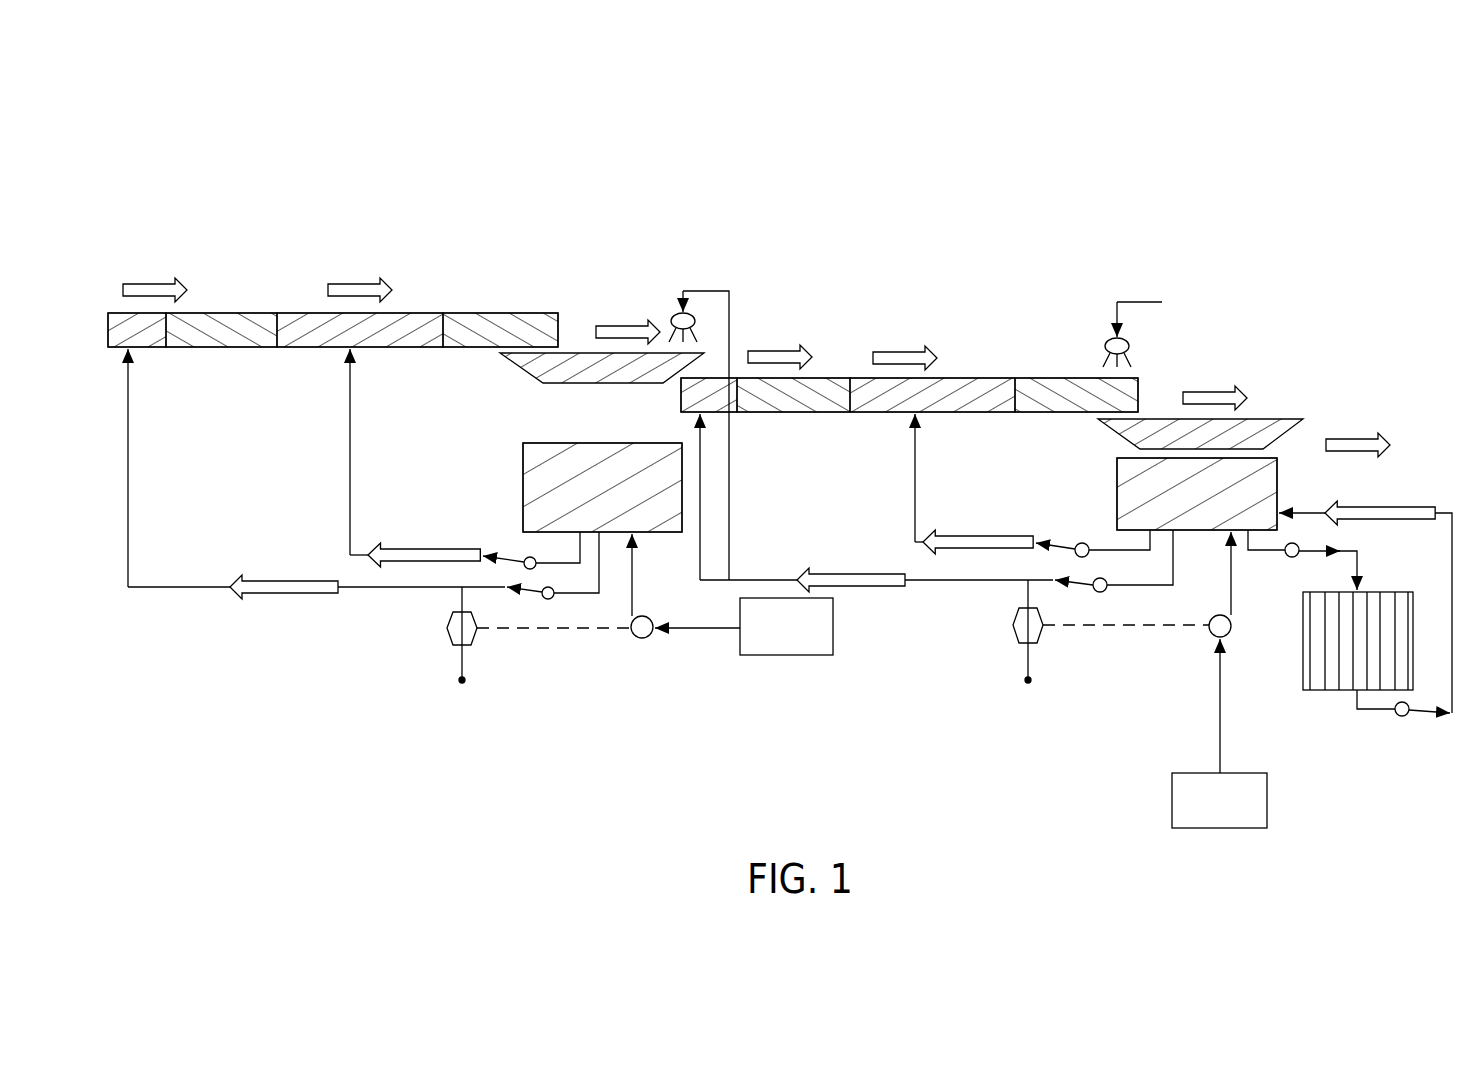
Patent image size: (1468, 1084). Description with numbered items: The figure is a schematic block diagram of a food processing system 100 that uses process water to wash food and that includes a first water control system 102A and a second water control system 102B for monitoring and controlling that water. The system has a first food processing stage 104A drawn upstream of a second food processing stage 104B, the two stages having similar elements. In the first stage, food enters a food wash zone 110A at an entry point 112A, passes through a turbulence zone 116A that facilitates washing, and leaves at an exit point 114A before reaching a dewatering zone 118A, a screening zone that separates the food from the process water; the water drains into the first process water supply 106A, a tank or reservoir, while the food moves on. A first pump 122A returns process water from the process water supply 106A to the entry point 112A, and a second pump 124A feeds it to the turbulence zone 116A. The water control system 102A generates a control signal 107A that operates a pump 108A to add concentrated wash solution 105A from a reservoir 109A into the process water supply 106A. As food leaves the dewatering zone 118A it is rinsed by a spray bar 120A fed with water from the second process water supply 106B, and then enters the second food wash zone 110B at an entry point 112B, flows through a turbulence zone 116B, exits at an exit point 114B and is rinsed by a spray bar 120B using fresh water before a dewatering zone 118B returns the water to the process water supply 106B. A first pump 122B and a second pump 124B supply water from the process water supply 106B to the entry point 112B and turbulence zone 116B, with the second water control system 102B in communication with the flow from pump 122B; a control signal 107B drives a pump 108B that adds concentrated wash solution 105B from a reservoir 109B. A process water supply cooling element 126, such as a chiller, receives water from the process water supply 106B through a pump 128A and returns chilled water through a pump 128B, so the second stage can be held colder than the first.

The food processing system 100 is at (773, 150).
The first water control system 102A is at (450, 640).
The second water control system 102B is at (1015, 640).
The first food processing stage 104A is at (414, 240).
The second food processing stage 104B is at (988, 243).
The concentrated wash solution 105A is at (715, 630).
The concentrated wash solution 105B is at (1218, 725).
The first process water supply 106A is at (578, 503).
The second process water supply 106B is at (1170, 506).
The control signal 107A is at (543, 632).
The control signal 107B is at (1060, 630).
The pump 108A is at (655, 633).
The pump 108B is at (1233, 628).
The reservoir 109A is at (761, 640).
The reservoir 109B is at (1194, 815).
The food wash zone 110A is at (283, 293).
The food wash zone 110B is at (991, 372).
The entry point 112A is at (118, 330).
The entry point 112B is at (713, 385).
The exit point 114A is at (548, 325).
The exit point 114B is at (1140, 388).
The turbulence zone 116A is at (390, 326).
The turbulence zone 116B is at (945, 385).
The dewatering zone 118A is at (560, 370).
The dewatering zone 118B is at (1250, 430).
The spray bar 120A is at (672, 305).
The spray bar 120B is at (1104, 335).
The first pump 122A is at (555, 600).
The first pump 122B is at (1100, 592).
The second pump 124A is at (530, 557).
The second pump 124B is at (1080, 543).
The process water supply cooling element 126 is at (1315, 692).
The pump 128A is at (1290, 557).
The pump 128B is at (1400, 716).